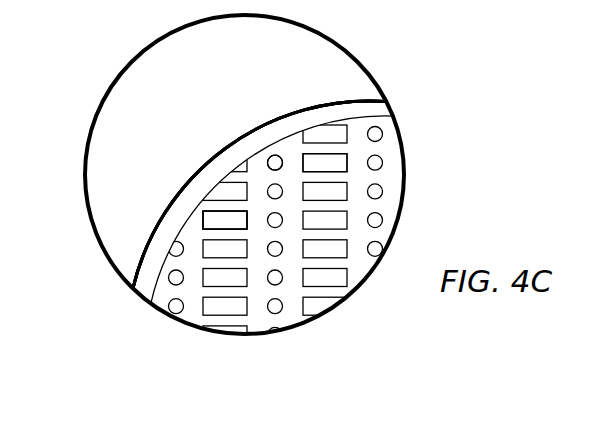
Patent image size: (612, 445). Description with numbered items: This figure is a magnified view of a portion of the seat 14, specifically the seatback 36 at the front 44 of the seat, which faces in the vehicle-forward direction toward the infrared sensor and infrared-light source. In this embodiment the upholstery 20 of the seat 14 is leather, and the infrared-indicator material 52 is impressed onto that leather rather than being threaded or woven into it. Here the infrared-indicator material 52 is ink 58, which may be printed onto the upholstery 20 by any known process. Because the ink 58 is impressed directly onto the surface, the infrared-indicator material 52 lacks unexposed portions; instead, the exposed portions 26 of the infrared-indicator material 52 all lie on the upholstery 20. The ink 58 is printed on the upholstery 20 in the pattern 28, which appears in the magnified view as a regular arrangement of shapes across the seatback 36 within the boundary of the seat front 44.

The seat 14 is at (202, 164).
The upholstery 20 is at (255, 155).
The exposed portions 26 is at (272, 156).
The pattern 28 is at (292, 150).
The seatback 36 is at (158, 226).
The front 44 is at (139, 260).
The infrared-indicator material 52 is at (225, 220).
The ink 58 is at (220, 222).